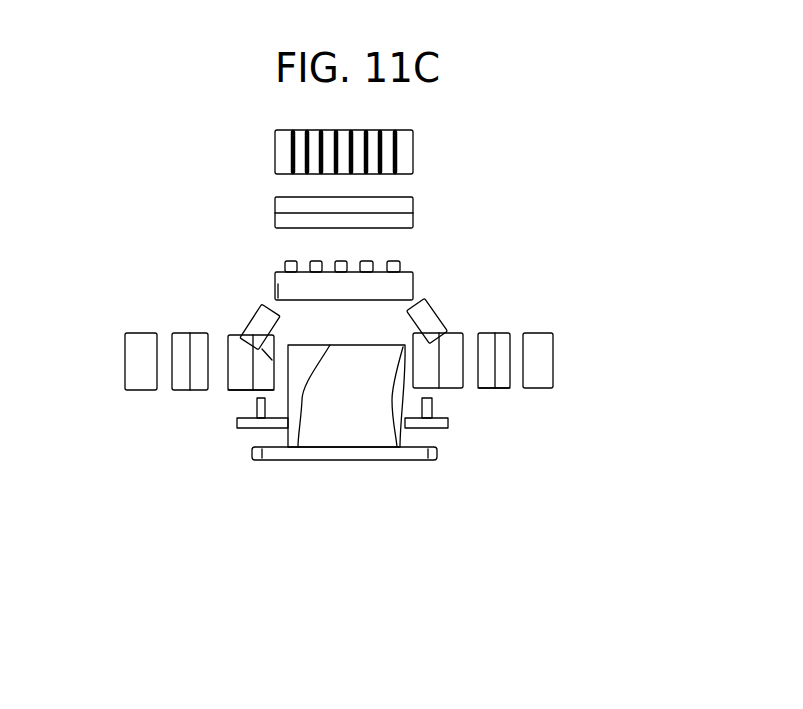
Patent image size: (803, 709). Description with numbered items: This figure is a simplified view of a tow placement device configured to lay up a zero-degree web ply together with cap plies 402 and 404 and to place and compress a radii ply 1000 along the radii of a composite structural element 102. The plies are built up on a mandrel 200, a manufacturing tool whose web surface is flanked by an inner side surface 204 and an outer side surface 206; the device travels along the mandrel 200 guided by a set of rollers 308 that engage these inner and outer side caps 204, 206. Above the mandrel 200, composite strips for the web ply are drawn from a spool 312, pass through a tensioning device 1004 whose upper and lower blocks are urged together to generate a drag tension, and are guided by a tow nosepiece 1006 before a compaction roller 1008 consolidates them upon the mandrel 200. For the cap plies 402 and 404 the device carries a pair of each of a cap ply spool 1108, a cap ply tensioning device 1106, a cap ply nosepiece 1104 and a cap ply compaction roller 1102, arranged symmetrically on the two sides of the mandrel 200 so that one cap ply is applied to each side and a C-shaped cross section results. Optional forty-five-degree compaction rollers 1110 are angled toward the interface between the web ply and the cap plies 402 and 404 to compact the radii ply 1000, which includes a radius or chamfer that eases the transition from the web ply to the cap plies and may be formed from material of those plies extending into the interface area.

The spool 312 is at (413, 153).
The tensioning device 1004 is at (413, 208).
The tow nosepiece 1006 is at (403, 272).
The compaction roller 1008 is at (278, 290).
The 45° compaction roller 1110 is at (262, 303).
The cap ply 404 is at (250, 312).
The cap ply 402 is at (420, 392).
The cap ply compaction roller 1102 is at (232, 333).
The cap ply tensioning device 1106 is at (205, 333).
The cap ply spool 1108 is at (133, 375).
The cap ply nosepiece 1104 is at (237, 393).
The rollers 308 is at (237, 424).
The mandrel 200 is at (355, 420).
The radii ply 1000 is at (298, 447).
The composite structural element 102 is at (335, 460).
The outer side surface 206 is at (271, 461).
The inner side surface 204 is at (427, 461).